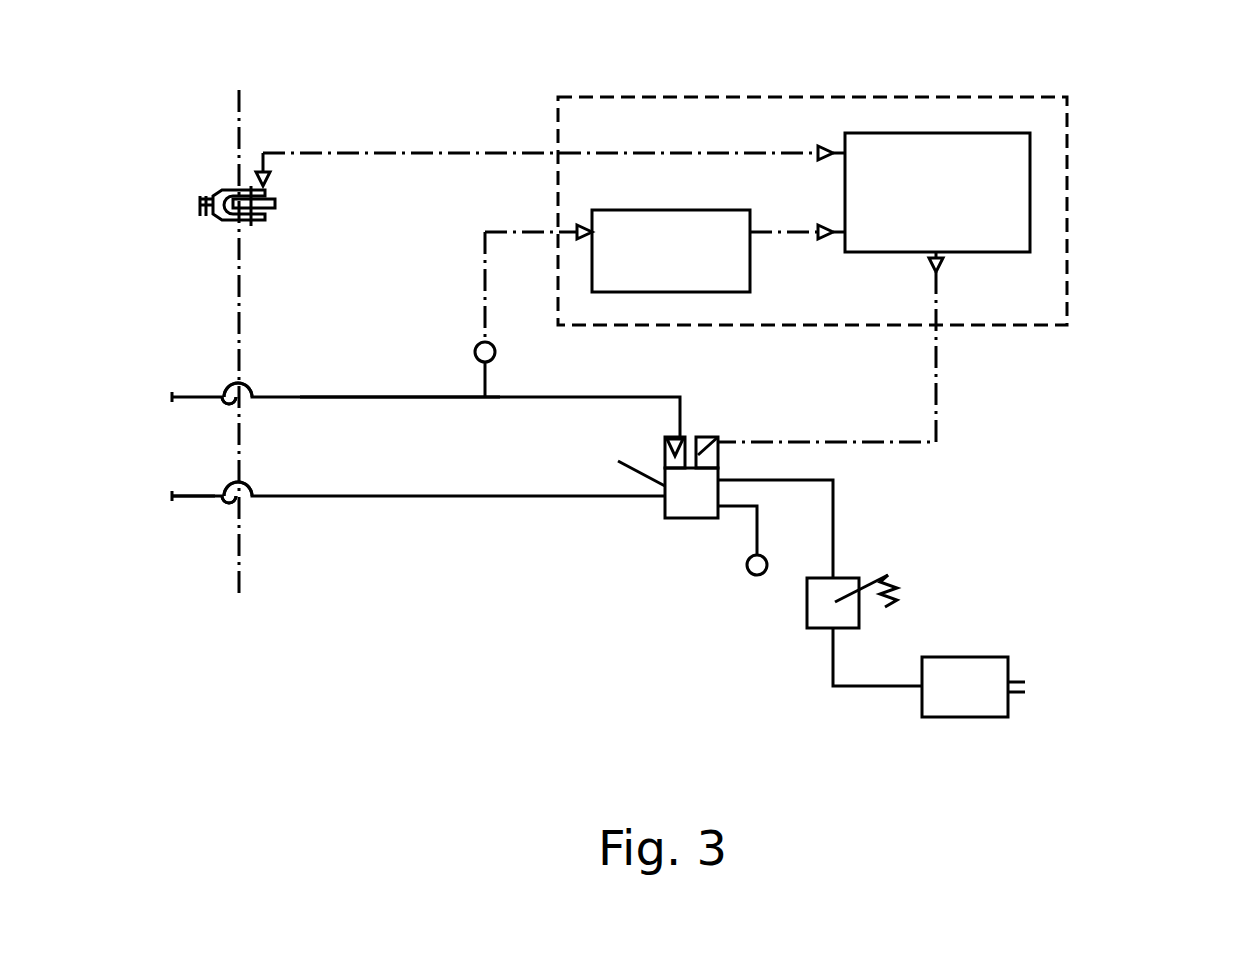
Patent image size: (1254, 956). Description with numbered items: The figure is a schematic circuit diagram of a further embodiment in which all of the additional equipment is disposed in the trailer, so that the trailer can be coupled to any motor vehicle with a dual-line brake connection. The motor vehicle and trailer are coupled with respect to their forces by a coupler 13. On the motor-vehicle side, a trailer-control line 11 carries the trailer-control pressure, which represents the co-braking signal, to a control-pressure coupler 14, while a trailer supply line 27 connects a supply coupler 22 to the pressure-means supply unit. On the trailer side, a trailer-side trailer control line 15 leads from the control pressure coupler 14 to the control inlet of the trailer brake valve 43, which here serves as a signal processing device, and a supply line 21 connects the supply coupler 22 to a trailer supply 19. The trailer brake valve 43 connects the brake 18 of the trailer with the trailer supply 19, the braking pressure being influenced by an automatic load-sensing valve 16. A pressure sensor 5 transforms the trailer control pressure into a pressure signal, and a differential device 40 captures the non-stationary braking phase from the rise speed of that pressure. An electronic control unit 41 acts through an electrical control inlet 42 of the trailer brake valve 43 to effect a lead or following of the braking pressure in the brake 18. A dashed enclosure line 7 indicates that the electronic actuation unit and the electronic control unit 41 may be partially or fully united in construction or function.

The pressure sensor 5 is at (482, 342).
The dashed enclosure line 7 is at (1068, 113).
The trailer-control line 11 is at (195, 396).
The coupler 13 is at (205, 190).
The control-pressure coupler 14 is at (222, 392).
The trailer-side trailer control line 15 is at (410, 397).
The automatic load-sensing valve 16 is at (820, 622).
The brake 18 is at (943, 712).
The trailer supply 19 is at (753, 575).
The supply line 21 is at (432, 497).
The supply coupler 22 is at (226, 504).
The trailer supply line 27 is at (198, 497).
The differential device 40 is at (652, 210).
The electronic control unit 41 is at (1031, 172).
The electrical control inlet 42 is at (718, 437).
The trailer brake valve 43 is at (683, 512).